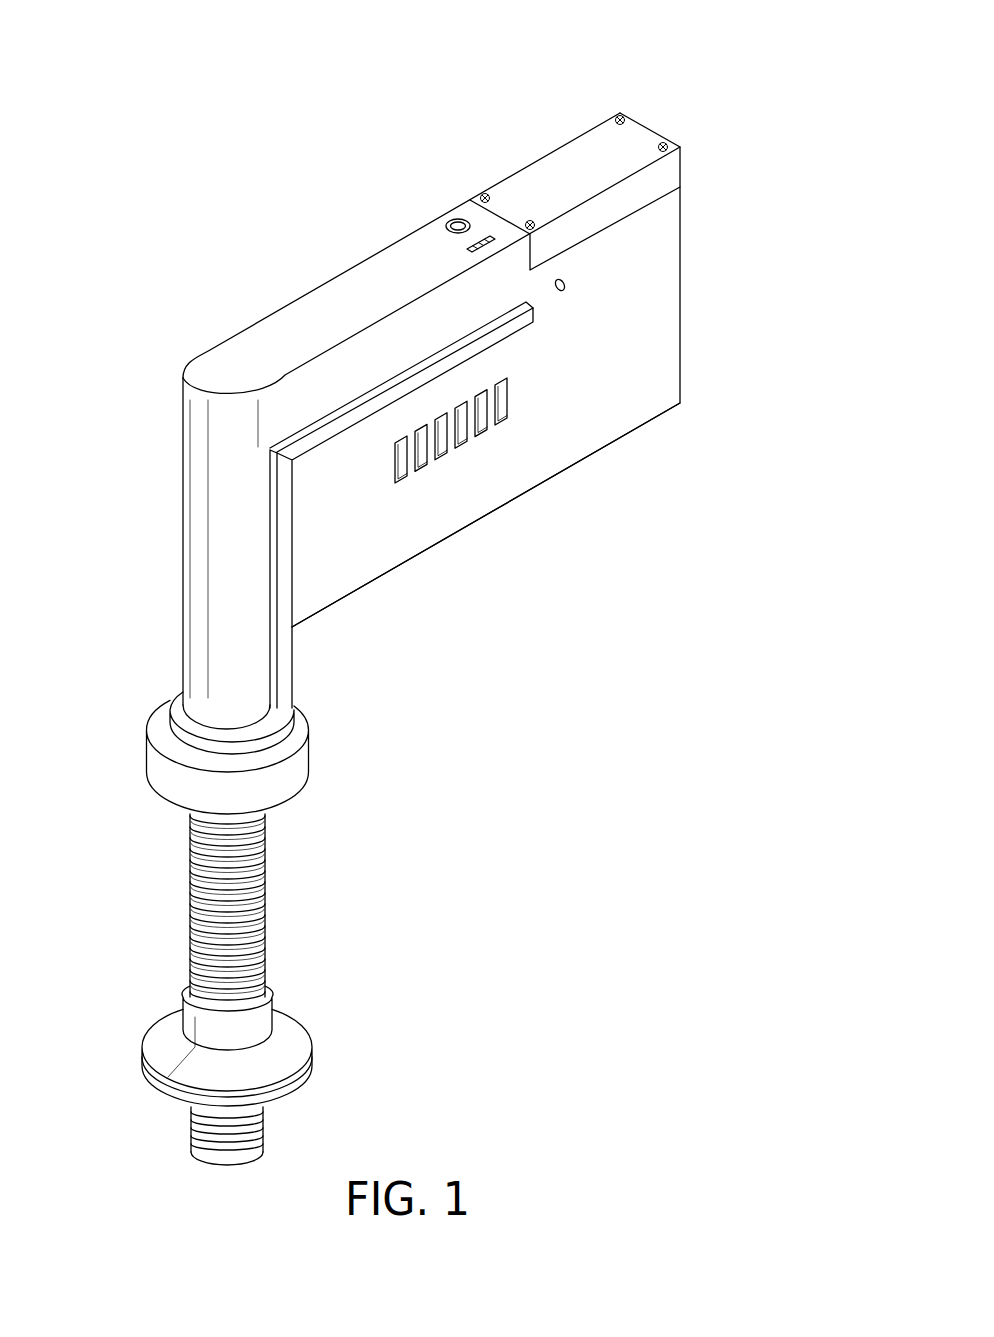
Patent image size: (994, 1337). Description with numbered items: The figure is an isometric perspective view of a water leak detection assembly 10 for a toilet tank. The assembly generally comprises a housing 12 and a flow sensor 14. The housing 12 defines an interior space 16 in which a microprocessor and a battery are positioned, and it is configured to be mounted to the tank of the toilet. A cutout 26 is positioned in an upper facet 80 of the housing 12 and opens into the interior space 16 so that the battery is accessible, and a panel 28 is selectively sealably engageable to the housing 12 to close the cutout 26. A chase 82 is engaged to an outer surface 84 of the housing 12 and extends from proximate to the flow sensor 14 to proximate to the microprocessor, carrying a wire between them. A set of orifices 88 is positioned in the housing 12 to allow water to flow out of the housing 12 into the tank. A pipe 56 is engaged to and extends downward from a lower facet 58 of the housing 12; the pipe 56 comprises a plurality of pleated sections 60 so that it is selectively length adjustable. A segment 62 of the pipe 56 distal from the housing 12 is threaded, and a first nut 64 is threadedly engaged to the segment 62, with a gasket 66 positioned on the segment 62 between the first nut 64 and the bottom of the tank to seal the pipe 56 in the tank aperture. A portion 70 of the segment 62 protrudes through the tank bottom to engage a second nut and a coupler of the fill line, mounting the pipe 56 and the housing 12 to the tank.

The water leak detection assembly 10 is at (203, 123).
The housing 12 is at (685, 275).
The flow sensor 14 is at (277, 775).
The interior space 16 is at (630, 357).
The cutout 26 is at (600, 163).
The panel 28 is at (562, 175).
The pipe 56 is at (247, 893).
The lower facet 58 is at (337, 607).
The pleated sections 60 is at (190, 960).
The segment 62 is at (185, 1118).
The first nut 64 is at (283, 1052).
The gasket 66 is at (305, 1087).
The portion 70 is at (210, 1160).
The upper facet 80 is at (356, 303).
The chase 82 is at (310, 428).
The outer surface 84 is at (397, 376).
The orifices 88 is at (504, 424).